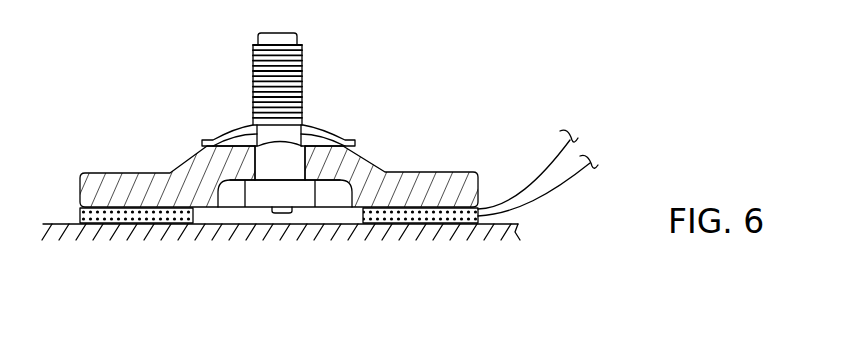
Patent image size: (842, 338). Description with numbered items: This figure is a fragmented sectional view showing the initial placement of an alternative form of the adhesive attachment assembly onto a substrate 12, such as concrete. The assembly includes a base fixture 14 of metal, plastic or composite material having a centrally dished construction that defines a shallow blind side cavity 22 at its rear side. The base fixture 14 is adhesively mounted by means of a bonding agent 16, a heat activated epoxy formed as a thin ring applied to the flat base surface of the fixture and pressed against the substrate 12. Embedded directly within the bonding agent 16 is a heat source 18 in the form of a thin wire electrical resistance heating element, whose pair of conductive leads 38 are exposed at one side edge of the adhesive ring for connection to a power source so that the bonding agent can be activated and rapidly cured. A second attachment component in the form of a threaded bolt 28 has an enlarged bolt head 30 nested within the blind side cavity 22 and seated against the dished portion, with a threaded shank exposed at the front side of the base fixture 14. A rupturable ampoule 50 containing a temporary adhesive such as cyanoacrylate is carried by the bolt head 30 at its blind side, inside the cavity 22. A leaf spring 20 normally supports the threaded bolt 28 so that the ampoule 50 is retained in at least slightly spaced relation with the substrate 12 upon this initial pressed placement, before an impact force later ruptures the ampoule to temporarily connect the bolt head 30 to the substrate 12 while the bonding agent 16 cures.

The substrate 12 is at (66, 224).
The base fixture 14 is at (403, 172).
The adhesive bonding agent 16 is at (113, 218).
The heat source 18 is at (143, 220).
The leaf spring 20 is at (317, 127).
The blind side cavity 22 is at (216, 202).
The threaded bolt 28 is at (253, 68).
The bolt head 30 is at (260, 190).
The conductive leads 38 is at (553, 192).
The rupturable ampoule 50 is at (282, 213).